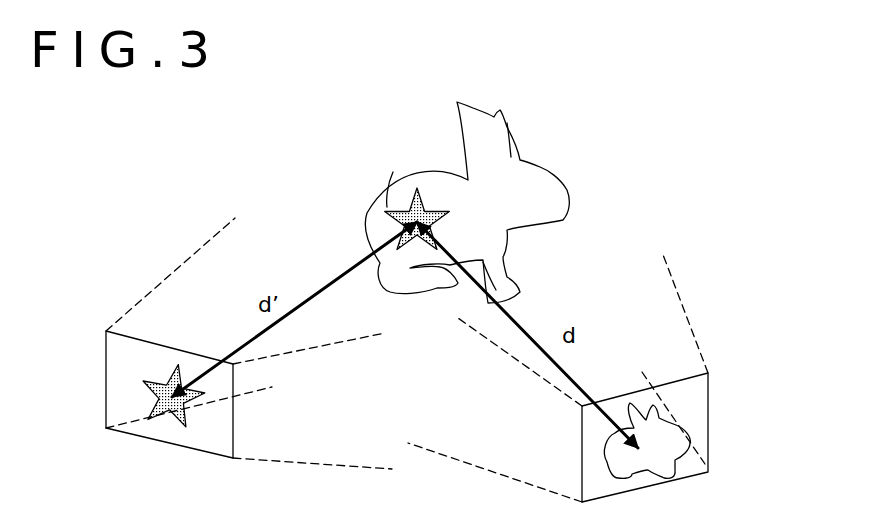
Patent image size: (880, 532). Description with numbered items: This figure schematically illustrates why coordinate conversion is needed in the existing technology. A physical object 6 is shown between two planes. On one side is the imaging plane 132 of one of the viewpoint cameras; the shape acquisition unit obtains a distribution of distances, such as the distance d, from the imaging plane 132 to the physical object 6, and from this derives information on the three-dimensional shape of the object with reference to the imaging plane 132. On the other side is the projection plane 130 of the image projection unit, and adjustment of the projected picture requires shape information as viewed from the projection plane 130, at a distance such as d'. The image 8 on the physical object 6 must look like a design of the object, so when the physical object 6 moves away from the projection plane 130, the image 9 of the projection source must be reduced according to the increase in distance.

The physical object 6 is at (540, 167).
The image 8 is at (394, 180).
The image of the projection source 9 is at (174, 425).
The projection plane 130 is at (106, 367).
The imaging plane 132 is at (711, 400).